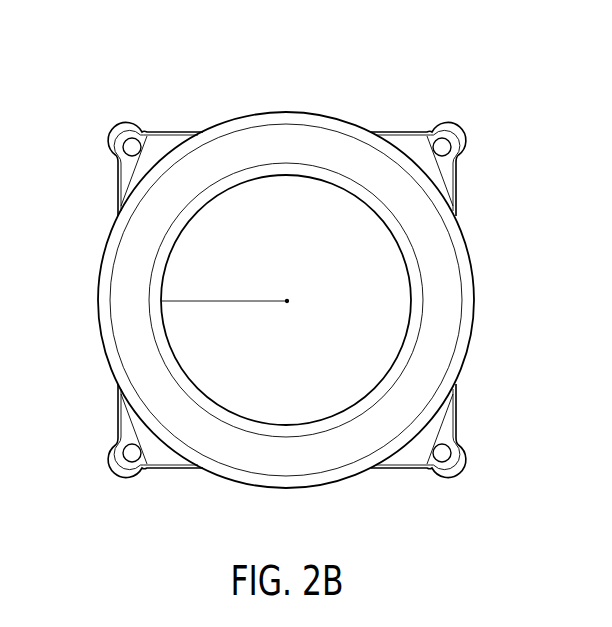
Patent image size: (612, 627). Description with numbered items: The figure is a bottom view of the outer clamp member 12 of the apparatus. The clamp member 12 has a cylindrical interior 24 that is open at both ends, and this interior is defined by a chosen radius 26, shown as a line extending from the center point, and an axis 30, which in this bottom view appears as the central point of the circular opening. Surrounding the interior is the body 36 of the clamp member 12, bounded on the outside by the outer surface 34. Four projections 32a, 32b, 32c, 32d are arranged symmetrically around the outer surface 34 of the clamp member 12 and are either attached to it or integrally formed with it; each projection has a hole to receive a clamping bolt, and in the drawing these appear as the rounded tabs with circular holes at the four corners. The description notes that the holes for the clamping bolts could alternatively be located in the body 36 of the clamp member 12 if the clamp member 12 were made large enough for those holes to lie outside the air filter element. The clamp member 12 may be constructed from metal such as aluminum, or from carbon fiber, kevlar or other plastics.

The outer clamp member 12 is at (289, 265).
The cylindrical interior 24 is at (233, 359).
The radius 26 is at (220, 301).
The axis 30 is at (289, 298).
The projection 32a is at (122, 128).
The projection 32b is at (442, 128).
The projection 32c is at (458, 455).
The projection 32d is at (115, 455).
The outer surface 34 is at (295, 112).
The body 36 is at (245, 147).